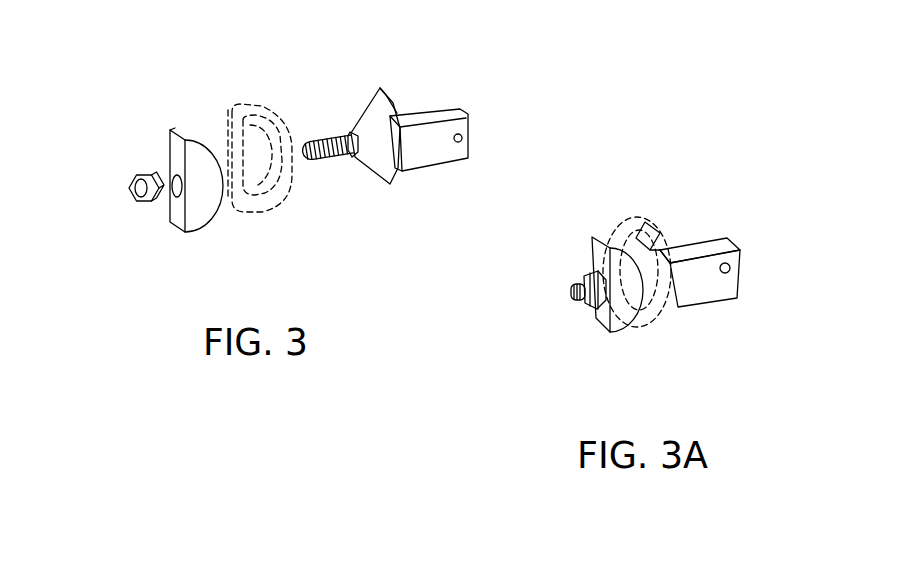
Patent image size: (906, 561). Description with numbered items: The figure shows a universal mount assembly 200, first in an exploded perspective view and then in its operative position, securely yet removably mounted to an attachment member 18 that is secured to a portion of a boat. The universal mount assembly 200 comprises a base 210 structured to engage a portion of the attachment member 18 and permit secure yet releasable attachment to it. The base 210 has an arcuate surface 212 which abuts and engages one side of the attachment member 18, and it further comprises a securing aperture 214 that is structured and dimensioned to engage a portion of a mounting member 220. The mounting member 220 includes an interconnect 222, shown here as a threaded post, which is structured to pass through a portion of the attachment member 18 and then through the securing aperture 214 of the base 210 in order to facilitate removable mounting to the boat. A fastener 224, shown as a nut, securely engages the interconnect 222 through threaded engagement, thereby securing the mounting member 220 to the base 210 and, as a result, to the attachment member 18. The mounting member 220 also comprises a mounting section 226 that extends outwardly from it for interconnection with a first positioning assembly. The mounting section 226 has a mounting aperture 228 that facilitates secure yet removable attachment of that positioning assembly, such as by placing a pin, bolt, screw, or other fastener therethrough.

In FIG. 3, the universal mount assembly 200 is at (182, 84).
In FIG. 3A, the universal mount assembly 200 is at (752, 322).
In FIG. 3, the base 210 is at (187, 138).
In FIG. 3A, the base 210 is at (622, 314).
In FIG. 3, the arcuate surface 212 is at (218, 208).
In FIG. 3, the securing aperture 214 is at (176, 196).
In FIG. 3, the fastener 224 is at (130, 182).
In FIG. 3A, the fastener 224 is at (583, 272).
In FIG. 3, the attachment member 18 is at (290, 207).
In FIG. 3A, the attachment member 18 is at (662, 318).
In FIG. 3, the interconnect 222 is at (317, 136).
In FIG. 3A, the interconnect 222 is at (572, 295).
In FIG. 3, the mounting member 220 is at (391, 103).
In FIG. 3A, the mounting member 220 is at (663, 242).
In FIG. 3, the mounting section 226 is at (427, 160).
In FIG. 3A, the mounting section 226 is at (731, 247).
In FIG. 3, the mounting aperture 228 is at (474, 130).